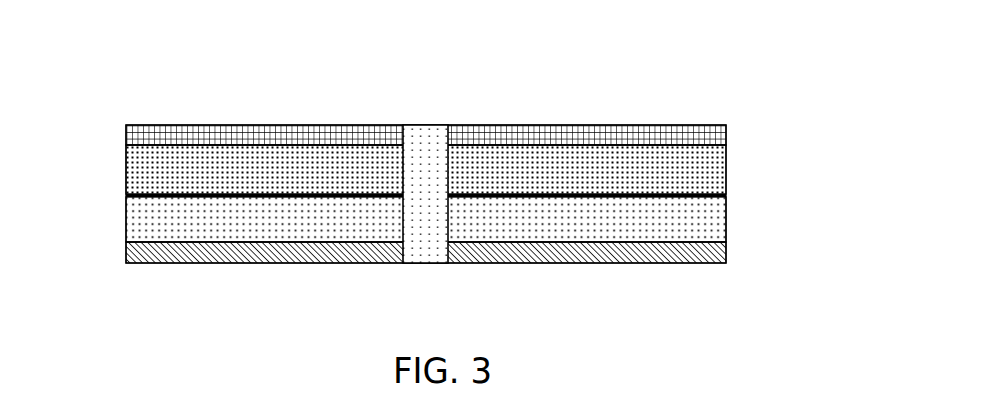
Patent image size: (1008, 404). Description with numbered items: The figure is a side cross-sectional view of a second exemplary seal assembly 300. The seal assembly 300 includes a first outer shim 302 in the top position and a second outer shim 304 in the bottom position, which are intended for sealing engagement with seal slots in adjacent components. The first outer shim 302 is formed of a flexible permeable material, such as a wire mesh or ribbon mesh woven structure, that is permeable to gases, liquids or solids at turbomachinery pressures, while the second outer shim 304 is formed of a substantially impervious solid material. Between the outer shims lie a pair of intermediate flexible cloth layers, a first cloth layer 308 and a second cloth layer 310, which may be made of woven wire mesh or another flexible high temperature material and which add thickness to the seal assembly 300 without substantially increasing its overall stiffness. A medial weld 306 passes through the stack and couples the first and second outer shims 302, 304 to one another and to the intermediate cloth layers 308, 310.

The seal assembly 300 is at (136, 74).
The first outer shim 302 is at (632, 133).
The second outer shim 304 is at (630, 262).
The medial weld 306 is at (422, 135).
The first cloth layer 308 is at (713, 173).
The second cloth layer 310 is at (715, 223).